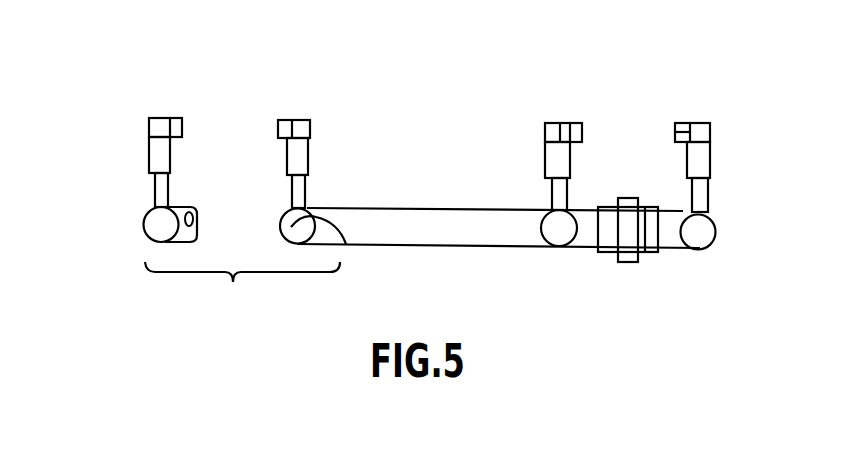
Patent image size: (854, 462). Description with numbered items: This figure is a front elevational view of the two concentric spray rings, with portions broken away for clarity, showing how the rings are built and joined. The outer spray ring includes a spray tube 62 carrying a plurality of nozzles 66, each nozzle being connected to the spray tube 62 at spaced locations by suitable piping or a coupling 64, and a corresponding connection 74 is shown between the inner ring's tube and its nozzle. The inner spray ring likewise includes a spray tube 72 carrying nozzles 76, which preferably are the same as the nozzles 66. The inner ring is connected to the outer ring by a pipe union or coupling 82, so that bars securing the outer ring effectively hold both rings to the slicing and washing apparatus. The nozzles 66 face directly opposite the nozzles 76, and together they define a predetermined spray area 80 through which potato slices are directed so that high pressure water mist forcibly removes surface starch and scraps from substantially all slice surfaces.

The spray tube 62 is at (150, 225).
The coupling 64 is at (153, 186).
The nozzles 66 is at (160, 120).
The spray tube 72 is at (346, 244).
The bolt shank 74 is at (308, 182).
The nozzles 76 is at (302, 127).
The spray area 80 is at (628, 128).
The coupling 82 is at (642, 260).